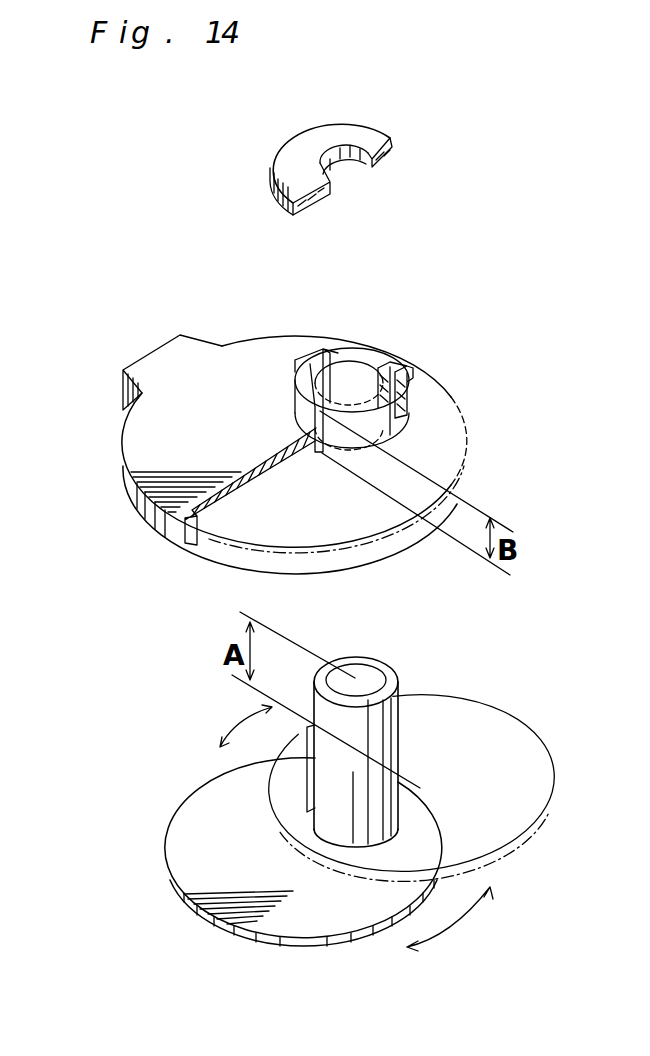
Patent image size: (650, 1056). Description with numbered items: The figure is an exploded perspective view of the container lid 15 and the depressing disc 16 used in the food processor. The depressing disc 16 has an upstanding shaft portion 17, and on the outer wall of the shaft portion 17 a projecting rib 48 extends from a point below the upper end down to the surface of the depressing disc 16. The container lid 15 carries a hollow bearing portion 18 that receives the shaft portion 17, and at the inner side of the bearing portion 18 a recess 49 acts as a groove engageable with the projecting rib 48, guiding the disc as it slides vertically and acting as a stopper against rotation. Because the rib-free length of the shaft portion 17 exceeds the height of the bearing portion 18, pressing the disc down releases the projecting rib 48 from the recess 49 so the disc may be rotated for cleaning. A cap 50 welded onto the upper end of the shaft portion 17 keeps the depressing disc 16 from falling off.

The container lid 15 is at (188, 450).
The depressing disc 16 is at (307, 895).
The shaft portion 17 is at (380, 730).
The bearing portion 18 is at (407, 397).
The projecting rib 48 is at (307, 757).
The recess 49 is at (300, 357).
The cap 50 is at (372, 133).